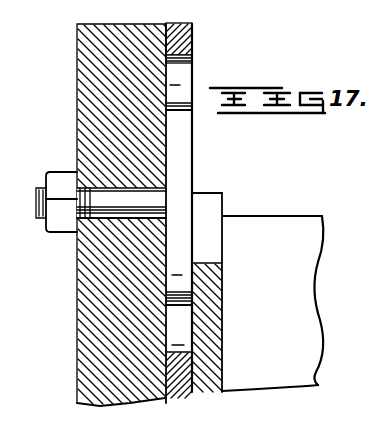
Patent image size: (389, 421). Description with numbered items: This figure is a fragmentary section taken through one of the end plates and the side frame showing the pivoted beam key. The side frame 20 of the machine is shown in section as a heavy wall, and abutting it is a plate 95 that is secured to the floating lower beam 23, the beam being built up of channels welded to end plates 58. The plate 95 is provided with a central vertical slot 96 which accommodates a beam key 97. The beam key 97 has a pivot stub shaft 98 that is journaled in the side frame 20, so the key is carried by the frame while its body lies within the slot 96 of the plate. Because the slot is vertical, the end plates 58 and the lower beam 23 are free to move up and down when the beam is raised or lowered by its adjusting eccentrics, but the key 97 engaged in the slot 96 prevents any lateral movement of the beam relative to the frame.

The side frame 20 is at (82, 66).
The floating lower beam 23 is at (271, 227).
The end plate 58 is at (211, 206).
The plate 95 is at (193, 40).
The central vertical slot 96 is at (176, 75).
The beam key 97 is at (182, 159).
The pivot stub shaft 98 is at (100, 222).